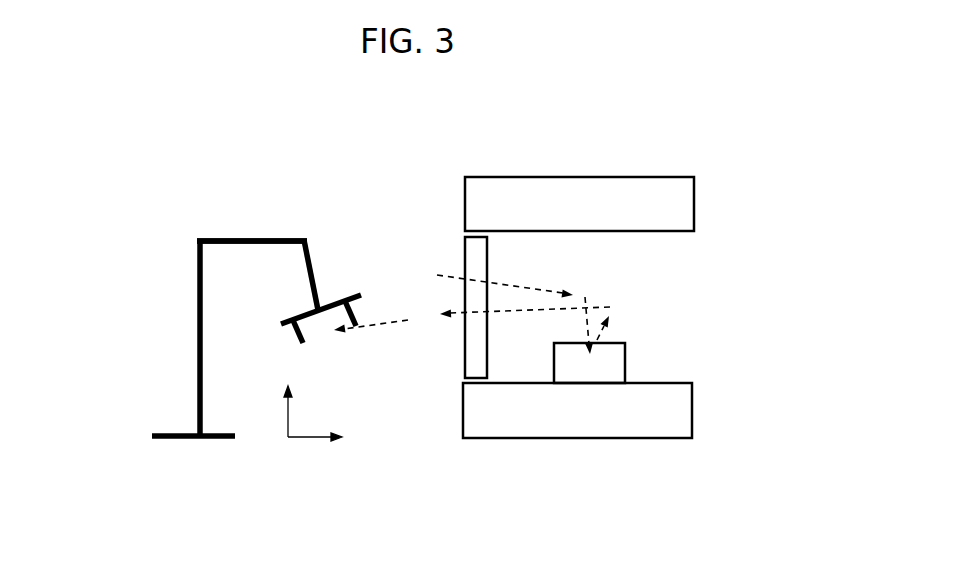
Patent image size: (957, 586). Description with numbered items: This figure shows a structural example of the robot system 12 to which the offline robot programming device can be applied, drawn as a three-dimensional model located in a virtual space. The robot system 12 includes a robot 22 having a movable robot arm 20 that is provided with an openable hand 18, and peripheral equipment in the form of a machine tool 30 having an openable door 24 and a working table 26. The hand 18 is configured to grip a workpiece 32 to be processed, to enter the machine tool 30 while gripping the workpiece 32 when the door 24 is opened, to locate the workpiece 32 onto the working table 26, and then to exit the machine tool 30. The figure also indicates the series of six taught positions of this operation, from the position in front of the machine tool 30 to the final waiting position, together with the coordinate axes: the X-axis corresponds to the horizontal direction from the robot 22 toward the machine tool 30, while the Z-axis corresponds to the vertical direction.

The robot system 12 is at (318, 141).
The hand 18 is at (285, 332).
The robot arm 20 is at (248, 240).
The robot 22 is at (146, 286).
The door 24 is at (465, 250).
The working table 26 is at (692, 410).
The machine tool 30 is at (666, 458).
The workpiece 32 is at (627, 363).